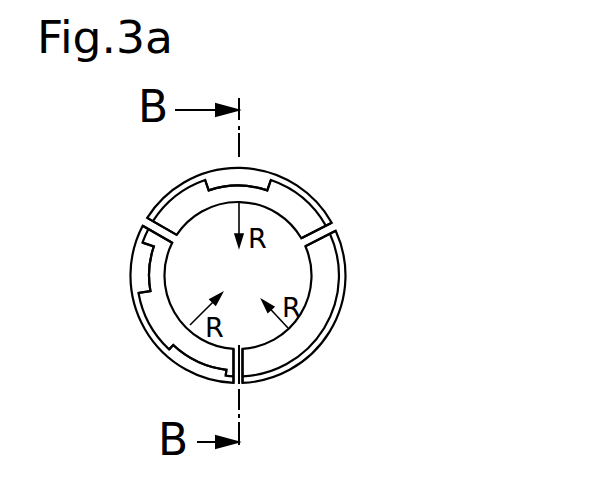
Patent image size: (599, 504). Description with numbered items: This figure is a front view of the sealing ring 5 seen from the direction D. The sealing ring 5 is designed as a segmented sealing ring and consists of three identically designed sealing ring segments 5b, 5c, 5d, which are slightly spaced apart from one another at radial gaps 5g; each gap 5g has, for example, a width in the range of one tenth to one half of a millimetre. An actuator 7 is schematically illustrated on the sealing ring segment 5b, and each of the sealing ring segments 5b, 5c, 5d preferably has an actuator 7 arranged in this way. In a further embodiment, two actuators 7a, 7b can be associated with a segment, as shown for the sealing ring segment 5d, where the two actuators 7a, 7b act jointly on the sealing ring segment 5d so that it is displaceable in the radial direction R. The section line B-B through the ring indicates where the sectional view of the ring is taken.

The sealing ring 5 is at (357, 183).
The sealing ring segment 5b is at (285, 192).
The sealing ring segment 5c is at (303, 345).
The sealing ring segment 5d is at (143, 323).
The gap 5g is at (141, 227).
The actuator 7 is at (266, 184).
The actuator 7a is at (142, 278).
The actuator 7b is at (188, 362).